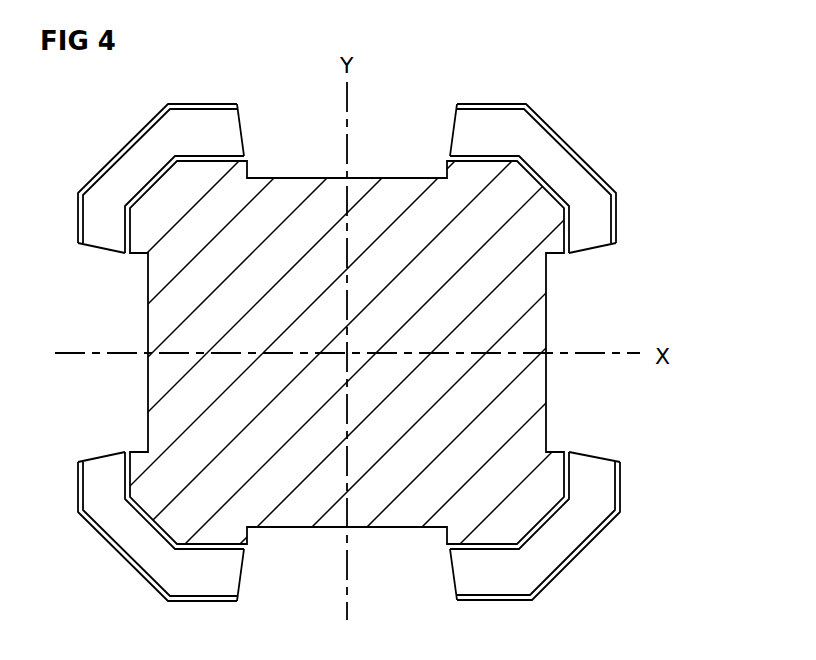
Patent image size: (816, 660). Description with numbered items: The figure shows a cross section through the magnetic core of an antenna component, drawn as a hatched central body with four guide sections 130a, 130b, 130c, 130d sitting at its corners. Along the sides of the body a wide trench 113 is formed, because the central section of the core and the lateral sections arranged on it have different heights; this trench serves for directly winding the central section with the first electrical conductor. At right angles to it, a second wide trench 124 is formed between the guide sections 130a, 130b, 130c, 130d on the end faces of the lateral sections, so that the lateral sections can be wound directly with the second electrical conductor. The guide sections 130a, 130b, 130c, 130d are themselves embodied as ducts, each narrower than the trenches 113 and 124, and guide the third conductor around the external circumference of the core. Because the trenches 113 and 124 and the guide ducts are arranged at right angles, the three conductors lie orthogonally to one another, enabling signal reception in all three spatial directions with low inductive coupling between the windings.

The trench/duct 113 is at (577, 283).
The trench/duct 124 is at (387, 158).
The guide section 130a is at (603, 553).
The guide section 130b is at (577, 131).
The guide section 130c is at (95, 142).
The guide section 130d is at (102, 567).